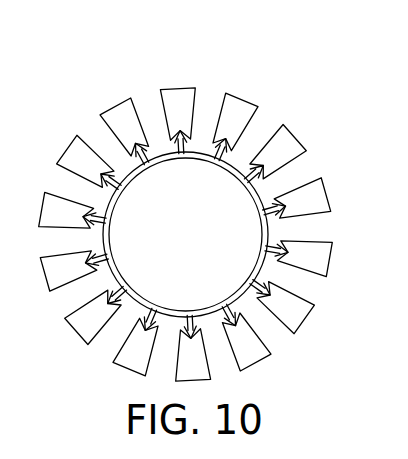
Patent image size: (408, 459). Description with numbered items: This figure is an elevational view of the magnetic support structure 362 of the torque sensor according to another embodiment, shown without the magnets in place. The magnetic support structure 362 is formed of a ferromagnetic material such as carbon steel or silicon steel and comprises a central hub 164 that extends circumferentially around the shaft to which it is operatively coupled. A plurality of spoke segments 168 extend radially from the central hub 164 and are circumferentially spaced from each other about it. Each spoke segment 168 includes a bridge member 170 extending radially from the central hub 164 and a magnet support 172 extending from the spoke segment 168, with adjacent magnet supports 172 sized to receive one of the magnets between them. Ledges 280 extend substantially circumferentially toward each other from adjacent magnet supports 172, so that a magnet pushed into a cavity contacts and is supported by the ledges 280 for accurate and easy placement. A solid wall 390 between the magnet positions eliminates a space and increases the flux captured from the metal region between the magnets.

The magnetic support structure 362 is at (203, 208).
The ledge 280 is at (152, 126).
The magnet support 172 is at (218, 107).
The solid wall 390 is at (275, 135).
The central hub 164 is at (118, 197).
The bridge member 170 is at (111, 272).
The spoke segment 168 is at (314, 285).